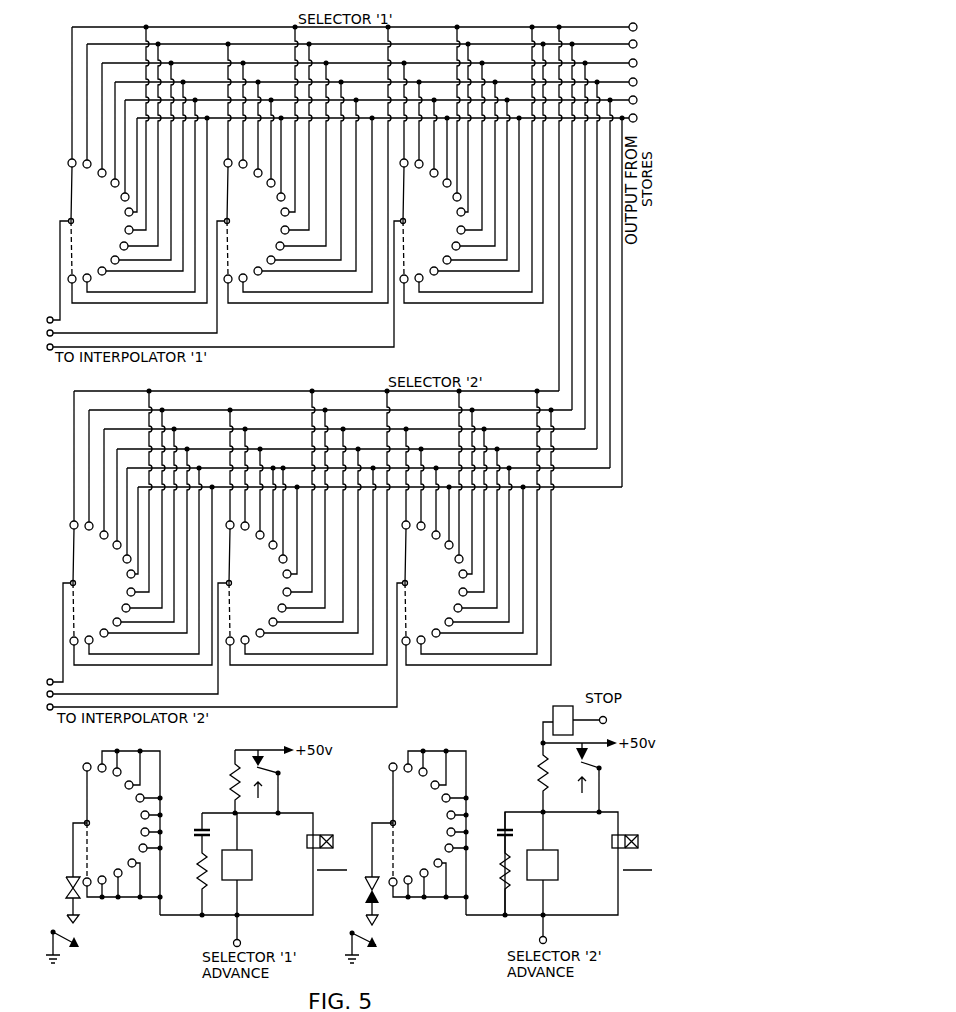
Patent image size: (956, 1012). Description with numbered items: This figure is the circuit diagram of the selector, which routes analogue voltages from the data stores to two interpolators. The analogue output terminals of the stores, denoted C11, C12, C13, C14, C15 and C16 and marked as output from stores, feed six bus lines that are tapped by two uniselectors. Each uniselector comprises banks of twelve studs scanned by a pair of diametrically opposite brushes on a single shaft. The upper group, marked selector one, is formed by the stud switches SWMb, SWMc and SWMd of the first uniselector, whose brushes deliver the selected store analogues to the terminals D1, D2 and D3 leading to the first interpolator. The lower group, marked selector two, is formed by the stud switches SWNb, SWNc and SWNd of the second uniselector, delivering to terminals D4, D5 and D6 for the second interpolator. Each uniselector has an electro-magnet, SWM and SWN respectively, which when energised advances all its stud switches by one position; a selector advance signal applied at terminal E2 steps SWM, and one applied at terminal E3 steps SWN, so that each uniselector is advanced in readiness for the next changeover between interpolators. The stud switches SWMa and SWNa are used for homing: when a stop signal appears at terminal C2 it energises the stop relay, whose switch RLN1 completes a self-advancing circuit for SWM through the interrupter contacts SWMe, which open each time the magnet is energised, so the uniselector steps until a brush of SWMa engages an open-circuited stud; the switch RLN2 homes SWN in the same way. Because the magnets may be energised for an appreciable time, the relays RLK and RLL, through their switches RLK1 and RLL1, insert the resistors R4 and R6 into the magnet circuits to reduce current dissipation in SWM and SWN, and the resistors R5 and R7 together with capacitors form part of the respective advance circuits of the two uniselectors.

The analogue output terminal of data store C11 is at (647, 29).
The analogue output terminal of data store C12 is at (647, 46).
The analogue output terminal of data store C13 is at (647, 65).
The analogue output terminal of data store C14 is at (647, 84).
The analogue output terminal of data store C15 is at (647, 102).
The analogue output terminal of data store C16 is at (647, 120).
The stud switch of uniselector SWM SWMb is at (137, 165).
The stud switch of uniselector SWM SWMc is at (307, 165).
The stud switch of uniselector SWM SWMd is at (473, 165).
The stud switch of uniselector SWN SWNb is at (141, 528).
The stud switch of uniselector SWN SWNc is at (308, 528).
The stud switch of uniselector SWN SWNd is at (478, 528).
The selector output terminal D1 is at (46, 274).
The selector output terminal D2 is at (124, 281).
The selector output terminal D3 is at (212, 287).
The selector output terminal D4 is at (47, 636).
The selector output terminal D5 is at (125, 643).
The selector output terminal D6 is at (213, 649).
The stud switch of uniselector SWM SWMa is at (121, 833).
The stud switch of uniselector SWN SWNa is at (427, 833).
The interrupter contacts SWMe is at (55, 873).
The resistor R4 is at (223, 781).
The resistor R5 is at (193, 864).
The resistor R6 is at (531, 777).
The resistor R7 is at (495, 863).
The relay switch RLK1 is at (285, 781).
The relay switch RLL1 is at (606, 777).
The relay winding RLK is at (327, 860).
The relay winding RLL is at (632, 860).
The relay switch RLN1 is at (81, 946).
The relay switch RLN2 is at (472, 834).
The uniselector electro-magnet SWM is at (248, 876).
The uniselector electro-magnet SWN is at (553, 874).
The selector advance terminal E2 is at (248, 938).
The selector advance terminal E3 is at (532, 938).
The stop signal terminal C2 is at (613, 720).